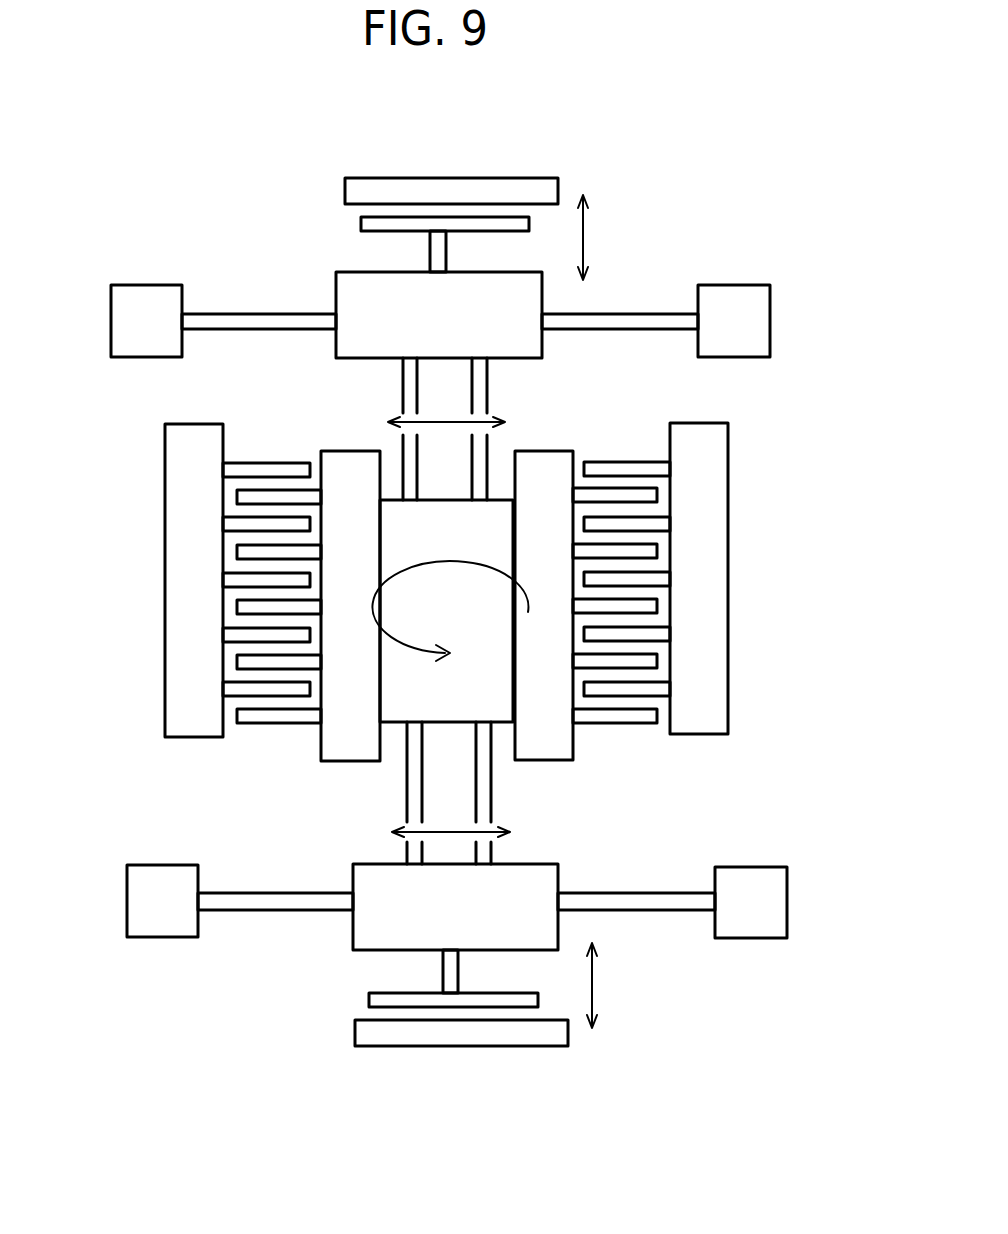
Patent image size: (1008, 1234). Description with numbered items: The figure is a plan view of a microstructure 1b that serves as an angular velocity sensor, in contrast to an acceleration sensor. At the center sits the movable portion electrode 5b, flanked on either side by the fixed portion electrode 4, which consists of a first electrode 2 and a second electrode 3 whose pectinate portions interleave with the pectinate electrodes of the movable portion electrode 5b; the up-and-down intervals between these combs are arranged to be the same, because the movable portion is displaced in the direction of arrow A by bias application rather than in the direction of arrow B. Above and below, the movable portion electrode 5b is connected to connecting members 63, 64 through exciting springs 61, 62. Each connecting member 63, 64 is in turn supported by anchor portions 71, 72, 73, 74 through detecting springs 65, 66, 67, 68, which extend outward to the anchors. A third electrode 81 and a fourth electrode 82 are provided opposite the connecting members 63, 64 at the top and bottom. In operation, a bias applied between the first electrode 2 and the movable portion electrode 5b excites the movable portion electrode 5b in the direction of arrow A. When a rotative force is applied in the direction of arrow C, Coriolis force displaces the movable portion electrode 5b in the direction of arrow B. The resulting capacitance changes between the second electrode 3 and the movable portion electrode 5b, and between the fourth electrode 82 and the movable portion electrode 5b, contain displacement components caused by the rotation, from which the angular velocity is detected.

The microstructure 1b is at (723, 217).
The first electrode 2 is at (192, 602).
The second electrode 3 is at (702, 598).
The fixed portion electrode 4 is at (649, 608).
The movable portion electrode 5b is at (573, 745).
The exciting spring 61 is at (477, 388).
The exciting spring 62 is at (415, 800).
The connecting member 63 is at (350, 300).
The connecting member 64 is at (543, 880).
The detecting spring 65 is at (238, 322).
The detecting spring 66 is at (637, 322).
The detecting spring 67 is at (257, 903).
The detecting spring 68 is at (645, 903).
The anchor portion 71 is at (147, 328).
The anchor portion 72 is at (745, 323).
The anchor portion 73 is at (153, 907).
The anchor portion 74 is at (750, 907).
The third electrode 81 is at (476, 178).
The fourth electrode 82 is at (462, 1046).